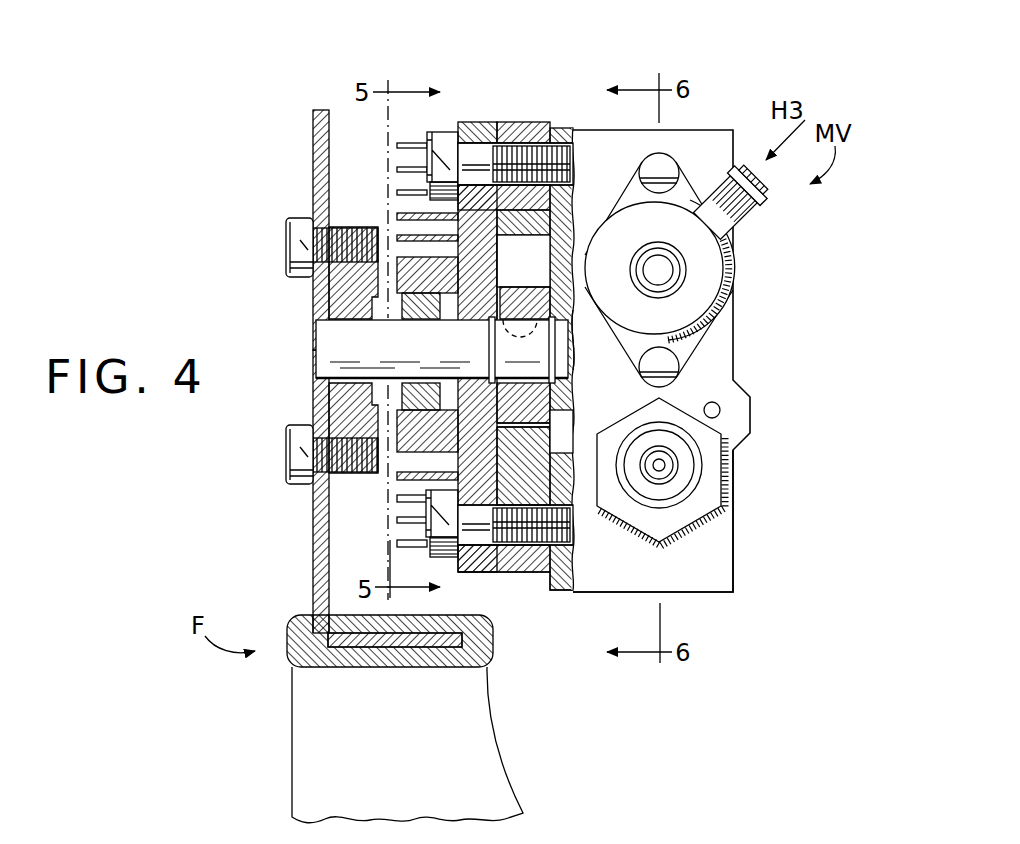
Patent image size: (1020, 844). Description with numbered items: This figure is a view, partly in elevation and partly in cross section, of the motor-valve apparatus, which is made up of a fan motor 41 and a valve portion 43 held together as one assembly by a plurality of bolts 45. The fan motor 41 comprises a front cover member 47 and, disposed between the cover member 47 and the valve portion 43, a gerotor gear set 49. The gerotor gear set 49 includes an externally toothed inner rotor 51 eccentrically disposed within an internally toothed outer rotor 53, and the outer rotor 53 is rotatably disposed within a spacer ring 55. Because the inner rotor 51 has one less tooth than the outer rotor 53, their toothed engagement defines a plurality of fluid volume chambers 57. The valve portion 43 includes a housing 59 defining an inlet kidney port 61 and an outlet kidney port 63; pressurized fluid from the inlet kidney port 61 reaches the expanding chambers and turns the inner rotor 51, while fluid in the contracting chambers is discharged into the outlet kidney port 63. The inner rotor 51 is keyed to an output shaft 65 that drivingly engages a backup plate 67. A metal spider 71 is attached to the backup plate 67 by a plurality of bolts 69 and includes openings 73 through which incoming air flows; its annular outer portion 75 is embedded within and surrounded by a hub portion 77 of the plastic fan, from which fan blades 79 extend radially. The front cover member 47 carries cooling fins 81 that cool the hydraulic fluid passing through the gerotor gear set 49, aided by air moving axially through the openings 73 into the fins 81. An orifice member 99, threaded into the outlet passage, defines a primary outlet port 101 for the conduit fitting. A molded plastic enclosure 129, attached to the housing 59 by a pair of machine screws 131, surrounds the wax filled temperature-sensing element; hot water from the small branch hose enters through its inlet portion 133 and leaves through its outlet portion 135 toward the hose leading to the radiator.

The fan motor 41 is at (536, 117).
The valve portion 43 is at (740, 127).
The bolts 45 is at (555, 166).
The front cover member 47 is at (475, 130).
The gerotor gear set 49 is at (514, 118).
The inner rotor 51 is at (517, 398).
The outer rotor 53 is at (512, 461).
The spacer ring 55 is at (510, 570).
The fluid volume chambers 57 is at (517, 260).
The housing 59 is at (710, 546).
The inlet kidney port 61 is at (576, 334).
The outlet kidney port 63 is at (557, 434).
The output shaft 65 is at (325, 340).
The backup plate 67 is at (332, 399).
The bolts 69 is at (294, 247).
The metal spider 71 is at (318, 555).
The openings 73 is at (313, 152).
The annular outer portion 75 is at (405, 641).
The hub portion 77 is at (470, 668).
The fan blades 79 is at (465, 749).
The cooling fins 81 is at (443, 219).
The orifice member 99 is at (645, 513).
The primary outlet port 101 is at (690, 463).
The molded plastic enclosure 129 is at (700, 259).
The machine screws 131 is at (663, 168).
The inlet portion 133 is at (745, 221).
The outlet portion 135 is at (675, 281).